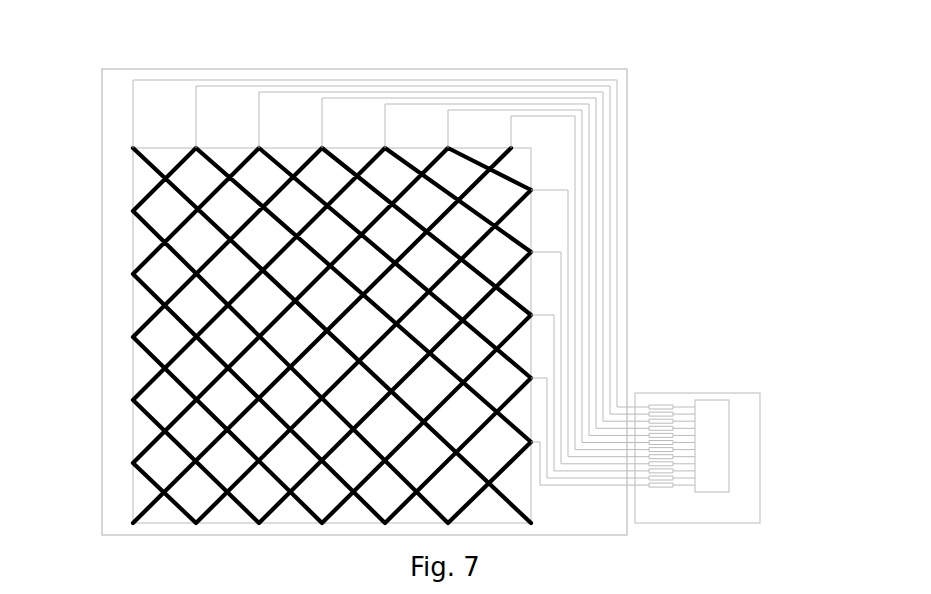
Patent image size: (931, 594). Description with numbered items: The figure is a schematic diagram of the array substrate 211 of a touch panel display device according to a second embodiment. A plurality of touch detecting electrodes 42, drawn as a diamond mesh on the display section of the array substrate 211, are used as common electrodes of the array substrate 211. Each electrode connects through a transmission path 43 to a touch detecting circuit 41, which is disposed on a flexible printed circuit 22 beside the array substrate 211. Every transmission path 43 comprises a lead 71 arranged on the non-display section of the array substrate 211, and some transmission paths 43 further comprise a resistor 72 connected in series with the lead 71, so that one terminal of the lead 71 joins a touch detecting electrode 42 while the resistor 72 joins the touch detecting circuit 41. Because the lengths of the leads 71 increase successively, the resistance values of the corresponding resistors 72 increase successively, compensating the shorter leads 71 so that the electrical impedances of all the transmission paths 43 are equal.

The array substrate 211 is at (363, 69).
The touch detecting electrodes 42 is at (140, 158).
The transmission paths 43 is at (445, 283).
The lead 71 is at (615, 342).
The resistor 72 is at (658, 405).
The touch detecting circuit 41 is at (728, 442).
The flexible printed circuit 22 is at (760, 483).